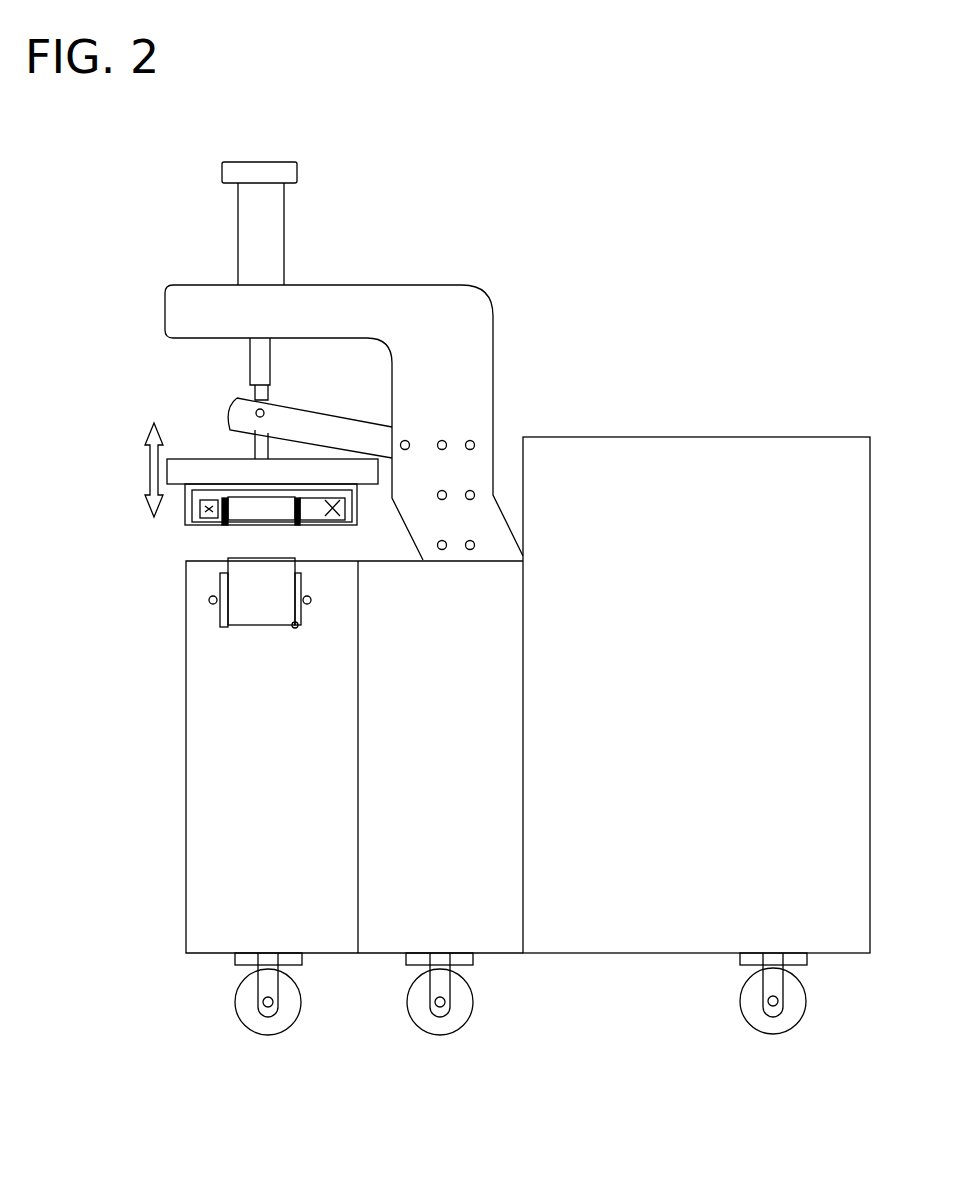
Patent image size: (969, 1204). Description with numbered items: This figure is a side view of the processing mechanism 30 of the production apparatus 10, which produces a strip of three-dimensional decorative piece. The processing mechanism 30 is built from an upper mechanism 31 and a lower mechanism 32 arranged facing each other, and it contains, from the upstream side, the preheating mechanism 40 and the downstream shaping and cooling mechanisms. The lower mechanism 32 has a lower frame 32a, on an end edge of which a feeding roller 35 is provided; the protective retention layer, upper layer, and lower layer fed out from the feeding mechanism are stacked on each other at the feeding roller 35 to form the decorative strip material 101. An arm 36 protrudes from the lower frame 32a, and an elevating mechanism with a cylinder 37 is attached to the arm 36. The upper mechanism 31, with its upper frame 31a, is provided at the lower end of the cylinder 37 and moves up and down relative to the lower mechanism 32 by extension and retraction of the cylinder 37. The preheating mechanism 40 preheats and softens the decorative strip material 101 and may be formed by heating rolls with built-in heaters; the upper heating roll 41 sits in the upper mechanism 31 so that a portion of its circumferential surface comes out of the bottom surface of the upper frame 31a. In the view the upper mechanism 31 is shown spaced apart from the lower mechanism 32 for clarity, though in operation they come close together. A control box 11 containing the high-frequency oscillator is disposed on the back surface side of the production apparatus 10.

The production apparatus 10 is at (462, 582).
The processing mechanism 30 is at (641, 224).
The control box 11 is at (742, 450).
The upper mechanism 31 is at (385, 472).
The upper frame 31a is at (355, 508).
The lower mechanism 32 is at (431, 798).
The lower frame 32a is at (232, 737).
The feeding roller 35 is at (220, 605).
The arm 36 is at (465, 323).
The cylinder 37 is at (258, 240).
The preheating mechanism 40 is at (211, 476).
The upper heating roll 41 is at (237, 511).
The decorative strip material 101 is at (277, 605).